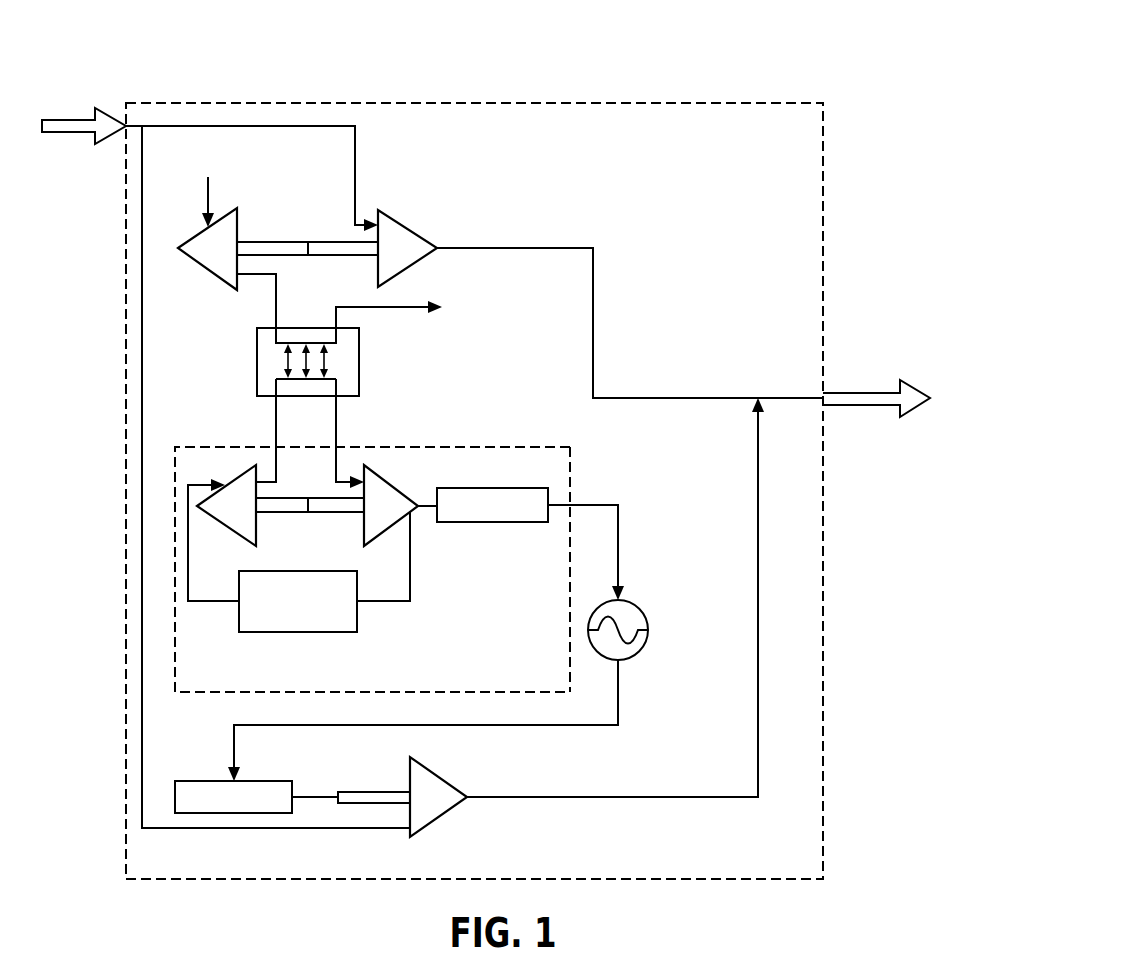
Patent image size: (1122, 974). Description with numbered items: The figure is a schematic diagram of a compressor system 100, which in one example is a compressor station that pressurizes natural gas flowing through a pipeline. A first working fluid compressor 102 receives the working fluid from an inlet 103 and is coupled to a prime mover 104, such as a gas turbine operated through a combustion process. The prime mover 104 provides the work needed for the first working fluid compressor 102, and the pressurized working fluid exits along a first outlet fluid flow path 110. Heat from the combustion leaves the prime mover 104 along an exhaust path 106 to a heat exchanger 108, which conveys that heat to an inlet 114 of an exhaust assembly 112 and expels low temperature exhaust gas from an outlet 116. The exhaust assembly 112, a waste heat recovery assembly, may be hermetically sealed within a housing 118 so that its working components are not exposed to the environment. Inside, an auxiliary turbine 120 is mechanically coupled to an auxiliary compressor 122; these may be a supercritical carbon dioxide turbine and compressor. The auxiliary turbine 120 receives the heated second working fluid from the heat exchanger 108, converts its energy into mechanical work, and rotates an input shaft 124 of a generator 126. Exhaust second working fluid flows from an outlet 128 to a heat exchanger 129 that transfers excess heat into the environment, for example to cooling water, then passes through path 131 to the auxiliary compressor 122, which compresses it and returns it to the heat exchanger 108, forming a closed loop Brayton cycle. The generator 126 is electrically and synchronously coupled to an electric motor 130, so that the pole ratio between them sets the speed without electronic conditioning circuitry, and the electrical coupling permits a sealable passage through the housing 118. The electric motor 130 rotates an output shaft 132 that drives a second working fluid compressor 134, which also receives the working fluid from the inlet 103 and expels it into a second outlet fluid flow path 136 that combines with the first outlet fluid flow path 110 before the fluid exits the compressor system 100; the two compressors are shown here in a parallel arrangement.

The compressor system 100 is at (680, 62).
The first working fluid compressor 102 is at (400, 218).
The inlet 103 is at (58, 118).
The prime mover 104 is at (230, 208).
The exhaust path 106 is at (277, 290).
The heat exchanger 108 is at (360, 348).
The first outlet fluid flow path 110 is at (505, 245).
The exhaust assembly 112 is at (470, 430).
The inlet 114 is at (338, 415).
The outlet 116 is at (400, 302).
The housing 118 is at (571, 447).
The auxiliary turbine 120 is at (397, 491).
The auxiliary compressor 122 is at (225, 480).
The input shaft 124 is at (441, 510).
The generator 126 is at (549, 490).
The outlet 128 is at (412, 583).
The heat exchanger 129 is at (358, 620).
The electric motor 130 is at (280, 780).
The path 131 is at (276, 405).
The output shaft 132 is at (325, 790).
The second working fluid compressor 134 is at (450, 798).
The second outlet fluid flow path 136 is at (676, 795).